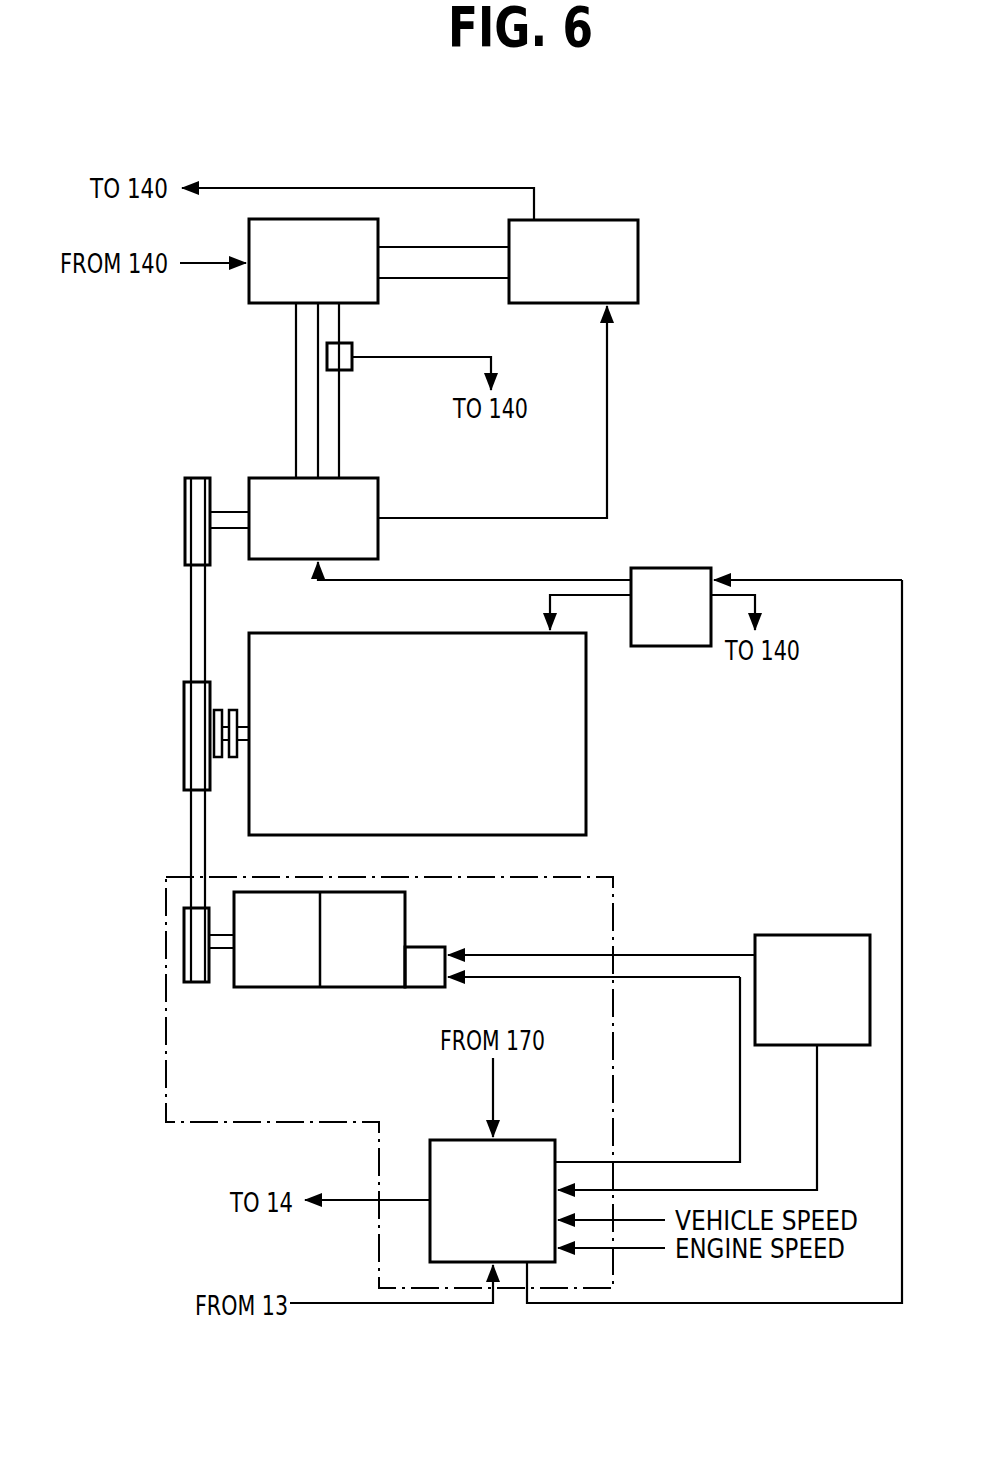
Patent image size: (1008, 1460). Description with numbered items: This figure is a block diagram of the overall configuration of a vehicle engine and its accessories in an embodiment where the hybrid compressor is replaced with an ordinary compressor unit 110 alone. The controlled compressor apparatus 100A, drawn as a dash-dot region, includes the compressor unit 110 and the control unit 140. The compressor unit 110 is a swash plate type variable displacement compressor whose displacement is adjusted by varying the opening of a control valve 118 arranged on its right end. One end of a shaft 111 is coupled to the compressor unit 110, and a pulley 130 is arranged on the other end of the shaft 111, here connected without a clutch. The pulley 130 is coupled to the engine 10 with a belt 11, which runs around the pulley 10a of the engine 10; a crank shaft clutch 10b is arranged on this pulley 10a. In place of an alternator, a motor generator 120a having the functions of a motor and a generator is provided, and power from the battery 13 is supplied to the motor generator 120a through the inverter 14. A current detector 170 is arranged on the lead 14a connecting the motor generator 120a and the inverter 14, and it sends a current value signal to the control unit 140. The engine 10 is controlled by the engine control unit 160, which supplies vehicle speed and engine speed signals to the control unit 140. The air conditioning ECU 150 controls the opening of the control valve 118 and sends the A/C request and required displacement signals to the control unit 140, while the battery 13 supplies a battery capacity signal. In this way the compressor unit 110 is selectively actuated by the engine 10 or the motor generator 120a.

The engine 10 is at (572, 705).
The pulley 10a is at (190, 706).
The crank shaft clutch 10b is at (218, 742).
The belt 11 is at (195, 825).
The battery 13 is at (607, 223).
The inverter 14 is at (372, 228).
The lead 14a is at (339, 320).
The current detector 170 is at (350, 367).
The motor generator 120a is at (355, 483).
The engine control unit 160 is at (687, 572).
The controlled compressor apparatus 100A is at (573, 876).
The pulley 130 is at (184, 920).
The shaft 111 is at (222, 938).
The compressor unit 110 is at (355, 980).
The control valve 118 is at (432, 950).
The air conditioning ECU 150 is at (805, 942).
The control unit 140 is at (528, 1148).